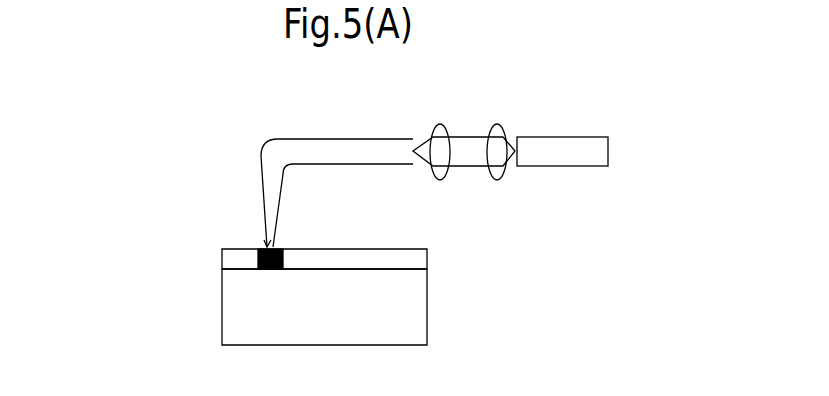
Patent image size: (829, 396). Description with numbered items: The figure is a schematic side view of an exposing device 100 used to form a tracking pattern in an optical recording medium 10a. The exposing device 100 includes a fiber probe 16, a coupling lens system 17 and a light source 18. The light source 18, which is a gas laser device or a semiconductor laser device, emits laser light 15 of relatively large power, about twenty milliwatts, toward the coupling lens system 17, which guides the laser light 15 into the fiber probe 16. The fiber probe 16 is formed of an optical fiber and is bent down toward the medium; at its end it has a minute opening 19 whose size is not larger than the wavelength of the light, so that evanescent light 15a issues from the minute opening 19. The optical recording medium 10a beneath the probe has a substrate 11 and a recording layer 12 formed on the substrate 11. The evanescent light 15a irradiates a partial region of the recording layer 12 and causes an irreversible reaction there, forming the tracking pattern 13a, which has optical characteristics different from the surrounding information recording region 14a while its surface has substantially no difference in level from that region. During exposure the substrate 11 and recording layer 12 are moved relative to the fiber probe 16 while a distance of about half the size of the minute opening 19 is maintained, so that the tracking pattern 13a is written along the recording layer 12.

The exposing device 100 is at (280, 108).
The fiber probe 16 is at (357, 139).
The minute opening 19 is at (267, 247).
The laser light 15 is at (467, 167).
The evanescent light 15a is at (302, 229).
The coupling lens system 17 is at (510, 127).
The light source 18 is at (598, 137).
The recording layer 12 is at (412, 258).
The substrate 11 is at (415, 306).
The optical recording medium 10a is at (270, 261).
The tracking pattern 13a is at (267, 248).
The information recording region 14a is at (245, 260).